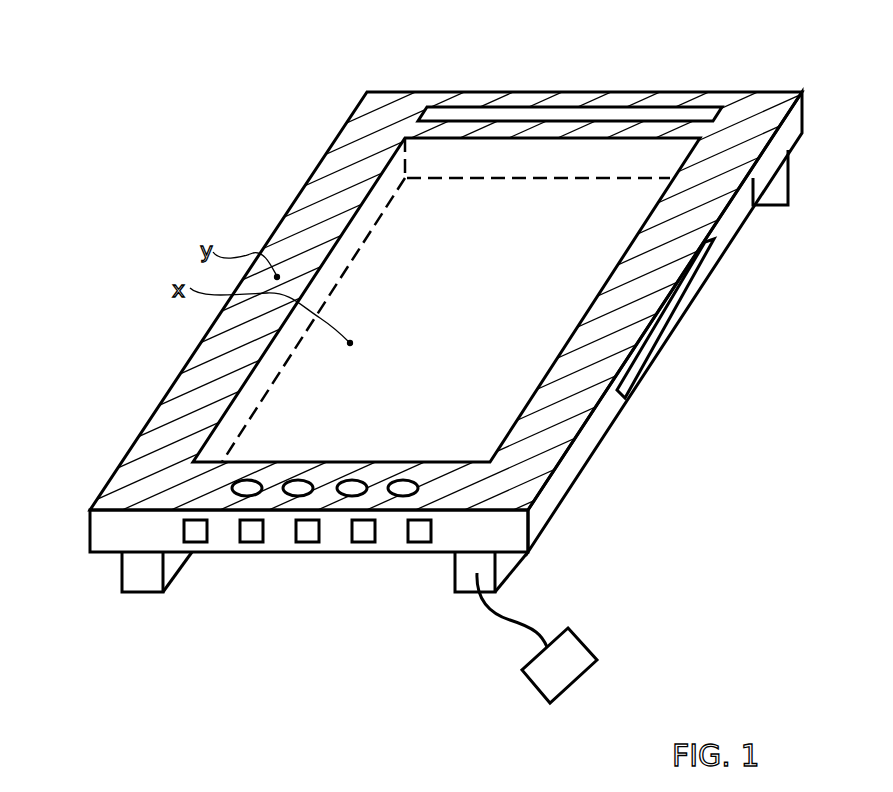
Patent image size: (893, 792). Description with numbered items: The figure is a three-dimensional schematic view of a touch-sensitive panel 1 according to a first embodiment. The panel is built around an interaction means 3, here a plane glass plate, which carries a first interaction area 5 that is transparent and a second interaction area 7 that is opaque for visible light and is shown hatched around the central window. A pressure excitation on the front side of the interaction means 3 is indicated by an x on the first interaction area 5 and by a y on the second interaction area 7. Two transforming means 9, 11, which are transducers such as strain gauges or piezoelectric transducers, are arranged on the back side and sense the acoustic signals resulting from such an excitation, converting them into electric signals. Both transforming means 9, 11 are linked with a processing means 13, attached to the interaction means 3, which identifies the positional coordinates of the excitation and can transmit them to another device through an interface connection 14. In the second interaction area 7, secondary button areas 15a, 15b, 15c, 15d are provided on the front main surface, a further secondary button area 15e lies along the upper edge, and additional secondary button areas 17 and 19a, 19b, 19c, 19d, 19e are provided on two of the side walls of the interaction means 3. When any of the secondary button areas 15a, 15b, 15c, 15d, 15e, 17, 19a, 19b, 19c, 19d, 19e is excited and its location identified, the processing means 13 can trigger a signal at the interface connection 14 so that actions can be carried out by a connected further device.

The touch-sensitive panel 1 is at (380, 56).
The interaction means 3 is at (574, 465).
The first interaction area 5 is at (514, 162).
The second interaction area 7 is at (366, 136).
The transforming means 9 is at (142, 582).
The transforming means 11 is at (790, 182).
The processing means 13 is at (463, 583).
The interface connection 14 is at (545, 680).
The secondary button area 15a is at (233, 483).
The secondary button area 15b is at (298, 480).
The secondary button area 15c is at (352, 480).
The secondary button area 15d is at (403, 480).
The secondary button area 15e is at (609, 116).
The secondary button area 17 is at (678, 307).
The secondary button area 19a is at (194, 543).
The secondary button area 19b is at (250, 543).
The secondary button area 19c is at (306, 543).
The secondary button area 19d is at (362, 543).
The secondary button area 19e is at (418, 543).